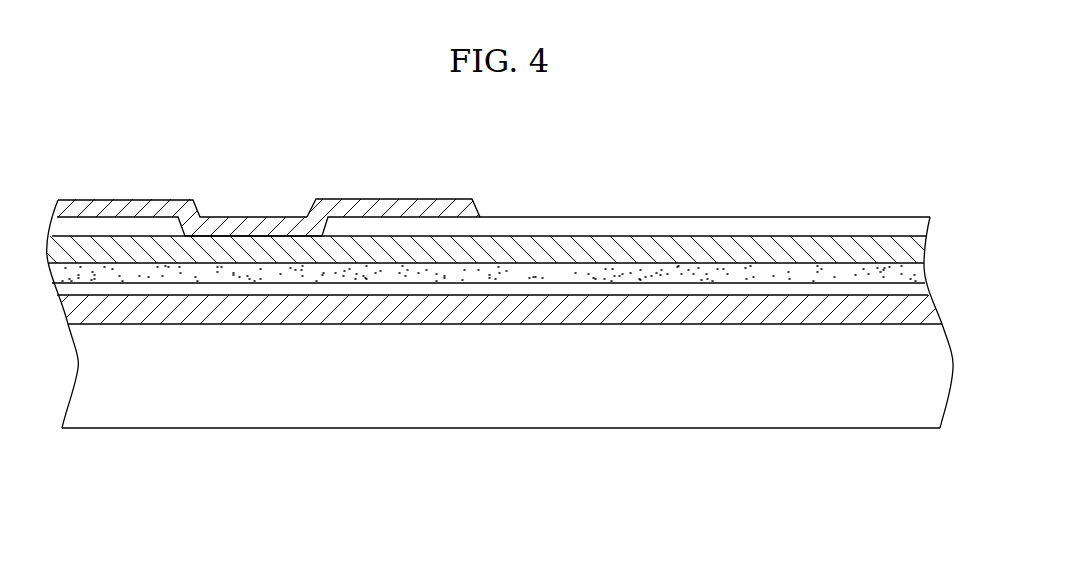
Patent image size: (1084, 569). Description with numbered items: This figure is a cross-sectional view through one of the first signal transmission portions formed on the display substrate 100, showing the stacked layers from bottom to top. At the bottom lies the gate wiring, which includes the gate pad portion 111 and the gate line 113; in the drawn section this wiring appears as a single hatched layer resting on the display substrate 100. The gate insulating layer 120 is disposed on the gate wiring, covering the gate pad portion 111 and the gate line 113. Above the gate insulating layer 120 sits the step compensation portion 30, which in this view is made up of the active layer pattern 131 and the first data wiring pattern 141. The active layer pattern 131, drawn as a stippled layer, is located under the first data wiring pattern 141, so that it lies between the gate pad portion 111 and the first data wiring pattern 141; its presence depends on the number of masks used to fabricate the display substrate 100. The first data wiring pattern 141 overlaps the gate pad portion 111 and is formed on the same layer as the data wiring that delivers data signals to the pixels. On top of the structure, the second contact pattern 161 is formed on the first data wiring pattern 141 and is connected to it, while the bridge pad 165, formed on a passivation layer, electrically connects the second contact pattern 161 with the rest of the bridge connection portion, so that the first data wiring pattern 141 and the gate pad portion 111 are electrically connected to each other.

The display substrate 100 is at (593, 405).
The gate pad portion 111 is at (325, 313).
The gate line 113 is at (795, 312).
The gate insulating layer 120 is at (462, 290).
The active layer pattern 131 is at (152, 262).
The first data wiring pattern 141 is at (238, 250).
The step compensation portion 30 is at (153, 508).
The second contact pattern 161 is at (258, 217).
The bridge pad 165 is at (426, 200).